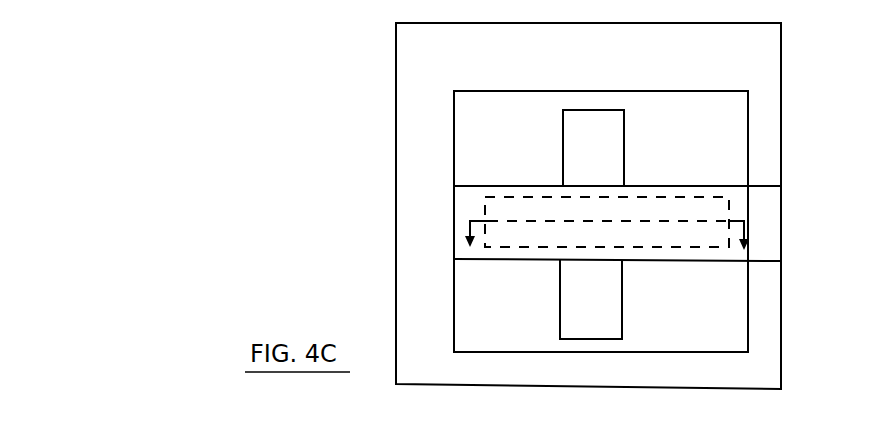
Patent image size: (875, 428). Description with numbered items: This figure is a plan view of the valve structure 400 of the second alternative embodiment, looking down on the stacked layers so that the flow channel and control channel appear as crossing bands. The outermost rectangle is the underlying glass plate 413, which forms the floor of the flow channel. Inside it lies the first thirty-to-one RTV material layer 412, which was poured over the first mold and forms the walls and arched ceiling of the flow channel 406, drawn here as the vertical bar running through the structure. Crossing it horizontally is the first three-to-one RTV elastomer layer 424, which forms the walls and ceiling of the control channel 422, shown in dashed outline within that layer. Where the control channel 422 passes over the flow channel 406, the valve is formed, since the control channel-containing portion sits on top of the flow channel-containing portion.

The valve structure 400 is at (380, 145).
The glass plate 413 is at (767, 70).
The first 30:1 RTV 615 material layer 412 is at (735, 149).
The flow channel 406 is at (616, 137).
The first 3:1 RTV 615 elastomer layer 424 is at (773, 220).
The control channel 422 is at (687, 241).